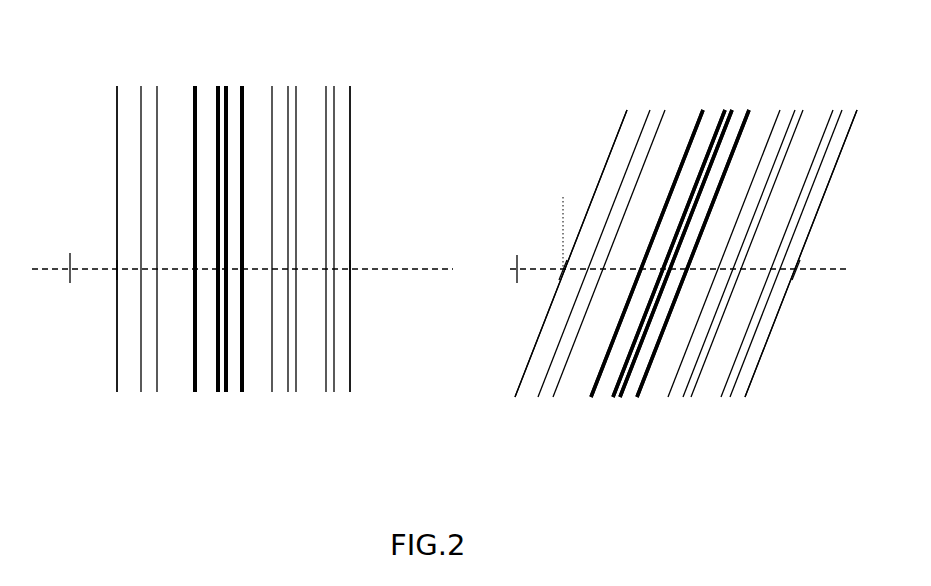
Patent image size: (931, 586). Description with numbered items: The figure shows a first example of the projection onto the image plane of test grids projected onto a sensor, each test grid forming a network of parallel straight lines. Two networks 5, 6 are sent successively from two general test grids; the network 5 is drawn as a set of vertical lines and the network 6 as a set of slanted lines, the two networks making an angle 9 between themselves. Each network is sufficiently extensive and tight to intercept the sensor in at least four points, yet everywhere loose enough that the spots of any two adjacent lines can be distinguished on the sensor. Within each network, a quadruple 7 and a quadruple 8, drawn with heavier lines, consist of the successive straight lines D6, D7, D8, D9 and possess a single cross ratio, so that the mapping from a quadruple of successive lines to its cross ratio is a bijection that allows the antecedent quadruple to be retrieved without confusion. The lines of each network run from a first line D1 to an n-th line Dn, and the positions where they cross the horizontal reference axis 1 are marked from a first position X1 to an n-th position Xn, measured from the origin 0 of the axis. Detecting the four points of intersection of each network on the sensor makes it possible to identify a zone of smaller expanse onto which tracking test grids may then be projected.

The axis / reference line 1 is at (55, 262).
The origin marker 0 is at (300, 273).
The network 5 is at (258, 275).
The network 6 is at (686, 294).
The quadruple 7 is at (238, 406).
The quadruple 8 is at (627, 418).
The angle 9 is at (572, 208).
The first line D1 is at (112, 108).
The straight line D6 is at (204, 90).
The straight line D7 is at (224, 90).
The straight line D8 is at (232, 90).
The straight line D9 is at (250, 92).
The n-th line Dn is at (364, 100).
The position of first line X1 is at (117, 275).
The position of n-th line Xn is at (350, 273).